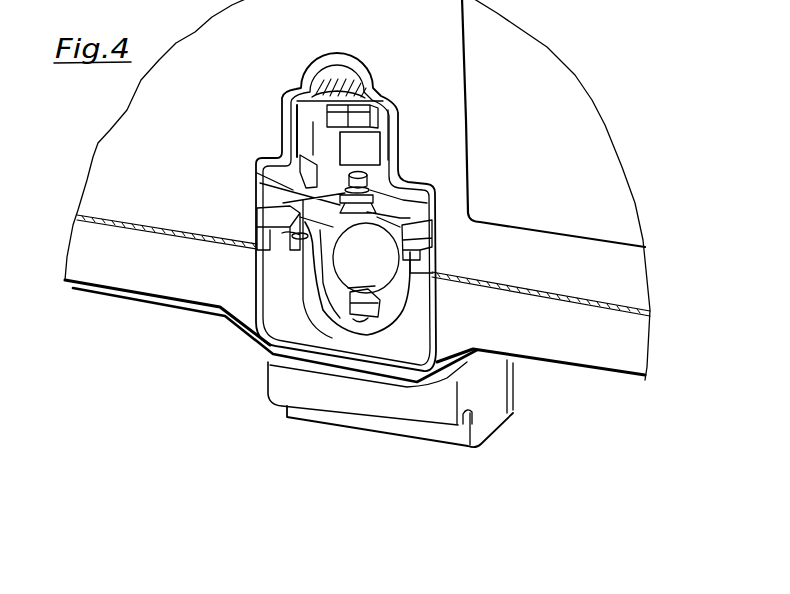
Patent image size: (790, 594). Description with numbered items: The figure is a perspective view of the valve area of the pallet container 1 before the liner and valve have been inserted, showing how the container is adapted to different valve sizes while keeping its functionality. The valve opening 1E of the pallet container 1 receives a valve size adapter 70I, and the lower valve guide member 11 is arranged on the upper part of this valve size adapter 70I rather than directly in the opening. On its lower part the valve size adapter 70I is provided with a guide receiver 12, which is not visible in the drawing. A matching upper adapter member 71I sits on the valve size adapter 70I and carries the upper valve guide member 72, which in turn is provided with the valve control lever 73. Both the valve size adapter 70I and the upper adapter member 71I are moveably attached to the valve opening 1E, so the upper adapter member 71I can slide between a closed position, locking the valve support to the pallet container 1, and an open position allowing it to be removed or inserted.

The pallet container 1 is at (153, 267).
The valve opening 1E is at (232, 351).
The lower valve guide member 11 is at (352, 303).
The guide receiver 12 is at (360, 324).
The valve size adapter 70I is at (411, 338).
The upper adapter member 71I is at (420, 240).
The upper valve guide member 72 is at (262, 227).
The valve control lever 73 is at (430, 187).